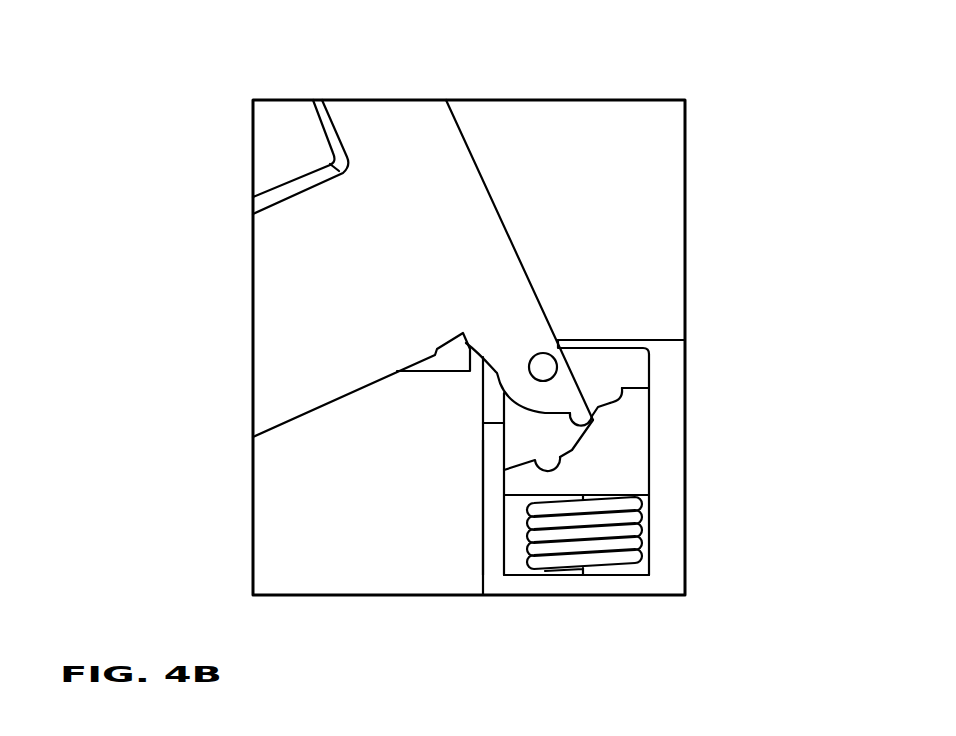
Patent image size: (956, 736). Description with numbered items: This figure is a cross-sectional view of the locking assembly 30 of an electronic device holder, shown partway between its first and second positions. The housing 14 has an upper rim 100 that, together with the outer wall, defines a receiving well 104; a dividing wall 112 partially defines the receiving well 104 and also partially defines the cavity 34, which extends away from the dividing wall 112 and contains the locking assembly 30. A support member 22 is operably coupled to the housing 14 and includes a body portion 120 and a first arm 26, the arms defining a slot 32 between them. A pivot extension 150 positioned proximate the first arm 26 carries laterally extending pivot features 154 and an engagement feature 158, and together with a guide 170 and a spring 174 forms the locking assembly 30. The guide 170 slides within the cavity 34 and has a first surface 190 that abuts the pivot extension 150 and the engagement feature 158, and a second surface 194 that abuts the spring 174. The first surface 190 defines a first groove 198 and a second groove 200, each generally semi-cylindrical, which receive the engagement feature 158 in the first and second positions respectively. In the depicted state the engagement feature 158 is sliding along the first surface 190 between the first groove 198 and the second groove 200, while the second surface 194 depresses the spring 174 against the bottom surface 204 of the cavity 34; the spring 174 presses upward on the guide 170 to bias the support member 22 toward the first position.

The housing 14 is at (277, 565).
The support member 22 is at (238, 156).
The first arm 26 is at (403, 135).
The locking assembly 30 is at (238, 125).
The slot 32 is at (283, 147).
The cavity 34 is at (518, 553).
The upper rim 100 is at (600, 486).
The receiving well 104 is at (297, 408).
The dividing wall 112 is at (492, 495).
The body portion 120 is at (290, 312).
The pivot extension 150 is at (648, 356).
The laterally extending pivot features 154 is at (540, 361).
The engagement feature 158 is at (592, 425).
The guide 170 is at (623, 448).
The spring 174 is at (669, 555).
The first surface 190 is at (575, 450).
The second surface 194 is at (597, 495).
The first groove 198 is at (622, 403).
The second groove 200 is at (556, 472).
The bottom surface 204 is at (608, 577).